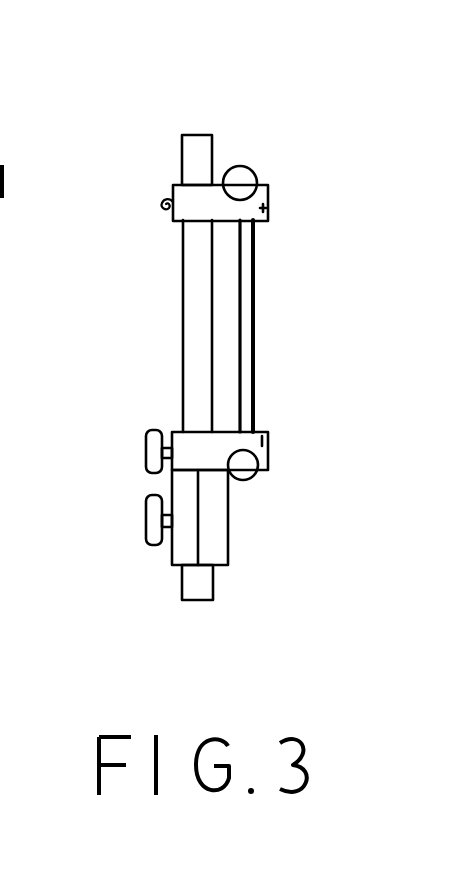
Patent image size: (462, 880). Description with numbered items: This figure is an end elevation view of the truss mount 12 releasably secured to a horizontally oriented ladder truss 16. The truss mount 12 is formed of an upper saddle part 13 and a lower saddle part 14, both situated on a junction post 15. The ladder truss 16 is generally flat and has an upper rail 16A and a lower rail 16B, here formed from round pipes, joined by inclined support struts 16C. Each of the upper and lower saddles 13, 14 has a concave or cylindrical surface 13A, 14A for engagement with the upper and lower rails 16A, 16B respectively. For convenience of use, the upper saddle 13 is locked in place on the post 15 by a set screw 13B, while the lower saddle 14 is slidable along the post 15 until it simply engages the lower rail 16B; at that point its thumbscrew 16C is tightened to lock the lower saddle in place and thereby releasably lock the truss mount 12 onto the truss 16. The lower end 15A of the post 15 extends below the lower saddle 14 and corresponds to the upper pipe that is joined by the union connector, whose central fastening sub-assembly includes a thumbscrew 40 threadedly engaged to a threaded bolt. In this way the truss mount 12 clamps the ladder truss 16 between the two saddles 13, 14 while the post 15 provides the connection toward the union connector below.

The truss mount 12 is at (13, 225).
The upper saddle part 13 is at (270, 213).
The concave or cylindrical surface 13A is at (238, 196).
The set screw 13B is at (160, 205).
The lower saddle part 14 is at (263, 440).
The concave or cylindrical surface 14A is at (247, 479).
The junction post 15 is at (197, 343).
The lower end of post 15A is at (200, 578).
The ladder truss 16 is at (270, 150).
The upper rail 16A is at (257, 177).
The lower rail 16B is at (258, 472).
The thumbscrew 16C is at (250, 331).
The thumbscrew 40 is at (146, 518).